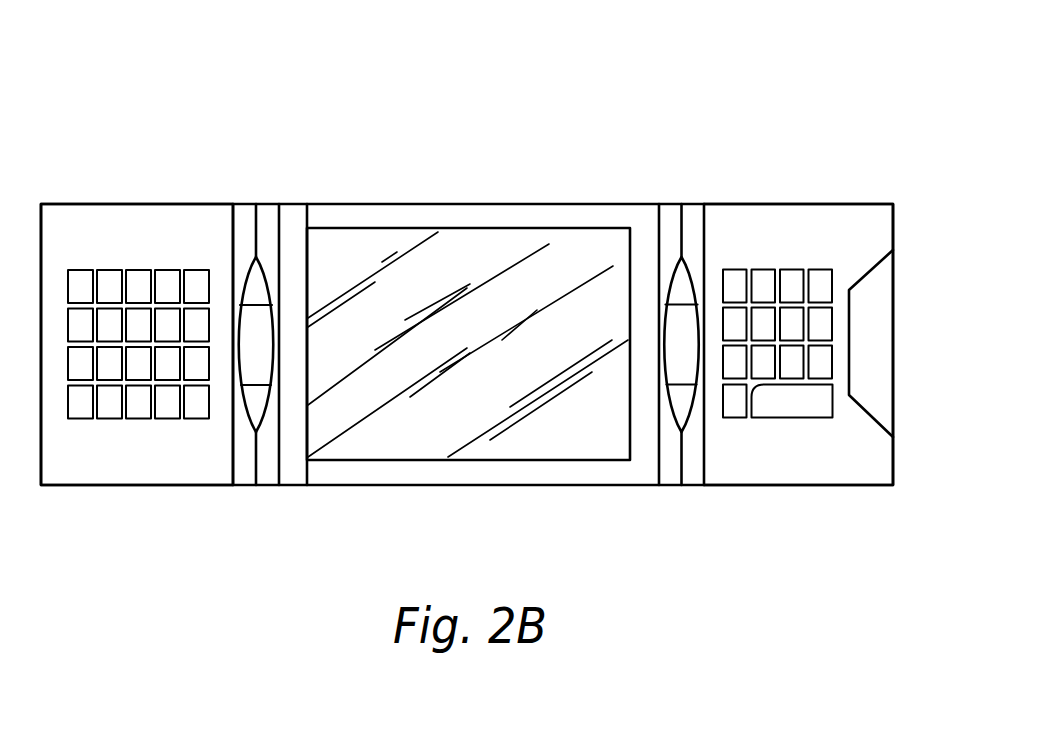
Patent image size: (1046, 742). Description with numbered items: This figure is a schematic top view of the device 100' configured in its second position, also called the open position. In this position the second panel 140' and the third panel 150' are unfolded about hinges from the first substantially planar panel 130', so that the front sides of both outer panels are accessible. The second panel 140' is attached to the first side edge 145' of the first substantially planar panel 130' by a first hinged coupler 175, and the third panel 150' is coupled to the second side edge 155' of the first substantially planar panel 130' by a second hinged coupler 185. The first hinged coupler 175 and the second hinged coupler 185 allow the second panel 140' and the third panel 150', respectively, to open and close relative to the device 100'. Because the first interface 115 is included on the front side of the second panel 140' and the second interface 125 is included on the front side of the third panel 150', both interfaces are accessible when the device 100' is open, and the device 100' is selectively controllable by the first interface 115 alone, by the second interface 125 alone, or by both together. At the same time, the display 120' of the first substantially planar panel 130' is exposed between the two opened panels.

The device 100' is at (467, 242).
The second panel 140' is at (137, 306).
The first hinged coupler 175 is at (258, 330).
The display 120' is at (468, 293).
The second hinged coupler 185 is at (685, 328).
The third panel 150' is at (798, 305).
The first interface 115 is at (140, 400).
The first side edge 145' is at (253, 388).
The first substantially planar panel 130' is at (477, 388).
The second side edge 155' is at (678, 388).
The second interface 125 is at (773, 395).